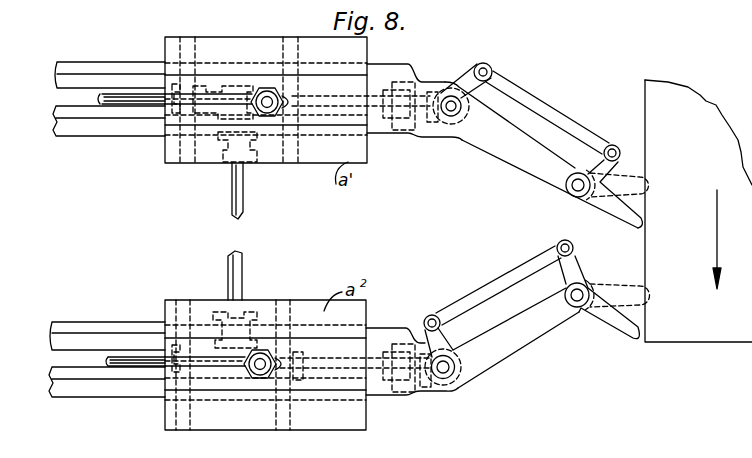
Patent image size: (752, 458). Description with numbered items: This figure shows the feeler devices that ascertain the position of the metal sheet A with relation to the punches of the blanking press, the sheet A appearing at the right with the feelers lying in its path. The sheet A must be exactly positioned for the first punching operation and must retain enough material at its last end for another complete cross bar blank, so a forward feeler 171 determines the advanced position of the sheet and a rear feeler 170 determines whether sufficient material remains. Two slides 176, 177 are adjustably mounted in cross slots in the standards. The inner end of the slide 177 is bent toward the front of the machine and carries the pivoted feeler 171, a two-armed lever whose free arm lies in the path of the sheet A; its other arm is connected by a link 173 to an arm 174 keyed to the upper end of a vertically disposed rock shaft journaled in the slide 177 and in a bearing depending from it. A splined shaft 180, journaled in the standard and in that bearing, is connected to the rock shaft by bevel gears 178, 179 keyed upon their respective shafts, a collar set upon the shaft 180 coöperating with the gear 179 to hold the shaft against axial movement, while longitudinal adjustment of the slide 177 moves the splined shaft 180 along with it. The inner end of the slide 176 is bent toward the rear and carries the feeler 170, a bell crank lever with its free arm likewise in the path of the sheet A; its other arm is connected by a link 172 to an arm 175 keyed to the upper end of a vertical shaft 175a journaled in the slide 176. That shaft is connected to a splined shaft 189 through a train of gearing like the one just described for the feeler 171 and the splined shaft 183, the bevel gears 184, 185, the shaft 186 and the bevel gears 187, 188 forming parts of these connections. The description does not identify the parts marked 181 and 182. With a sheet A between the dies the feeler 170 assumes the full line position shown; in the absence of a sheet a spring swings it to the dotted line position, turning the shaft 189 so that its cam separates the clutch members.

The rear feeler 170 is at (622, 217).
The forward feeler 171 is at (625, 329).
The link 172 is at (537, 104).
The link 173 is at (474, 296).
The arm 174 is at (448, 348).
The arm 175 is at (468, 73).
The vertically disposed shaft 175a is at (441, 90).
The slide 176 is at (541, 155).
The slide 177 is at (516, 338).
The bevel gear 178 is at (458, 382).
The bevel gear 179 is at (427, 388).
The splined shaft 180 is at (108, 360).
The clamping nut 181 is at (250, 384).
The clamp 182 is at (218, 347).
The splined shaft 183 is at (242, 284).
The bevel gear 184 is at (452, 126).
The bevel gear 185 is at (430, 121).
The shaft 186 is at (100, 98).
The bevel gear 187 is at (221, 88).
The bevel gear 188 is at (281, 113).
The splined shaft 189 is at (243, 201).
The metal sheet A is at (698, 211).